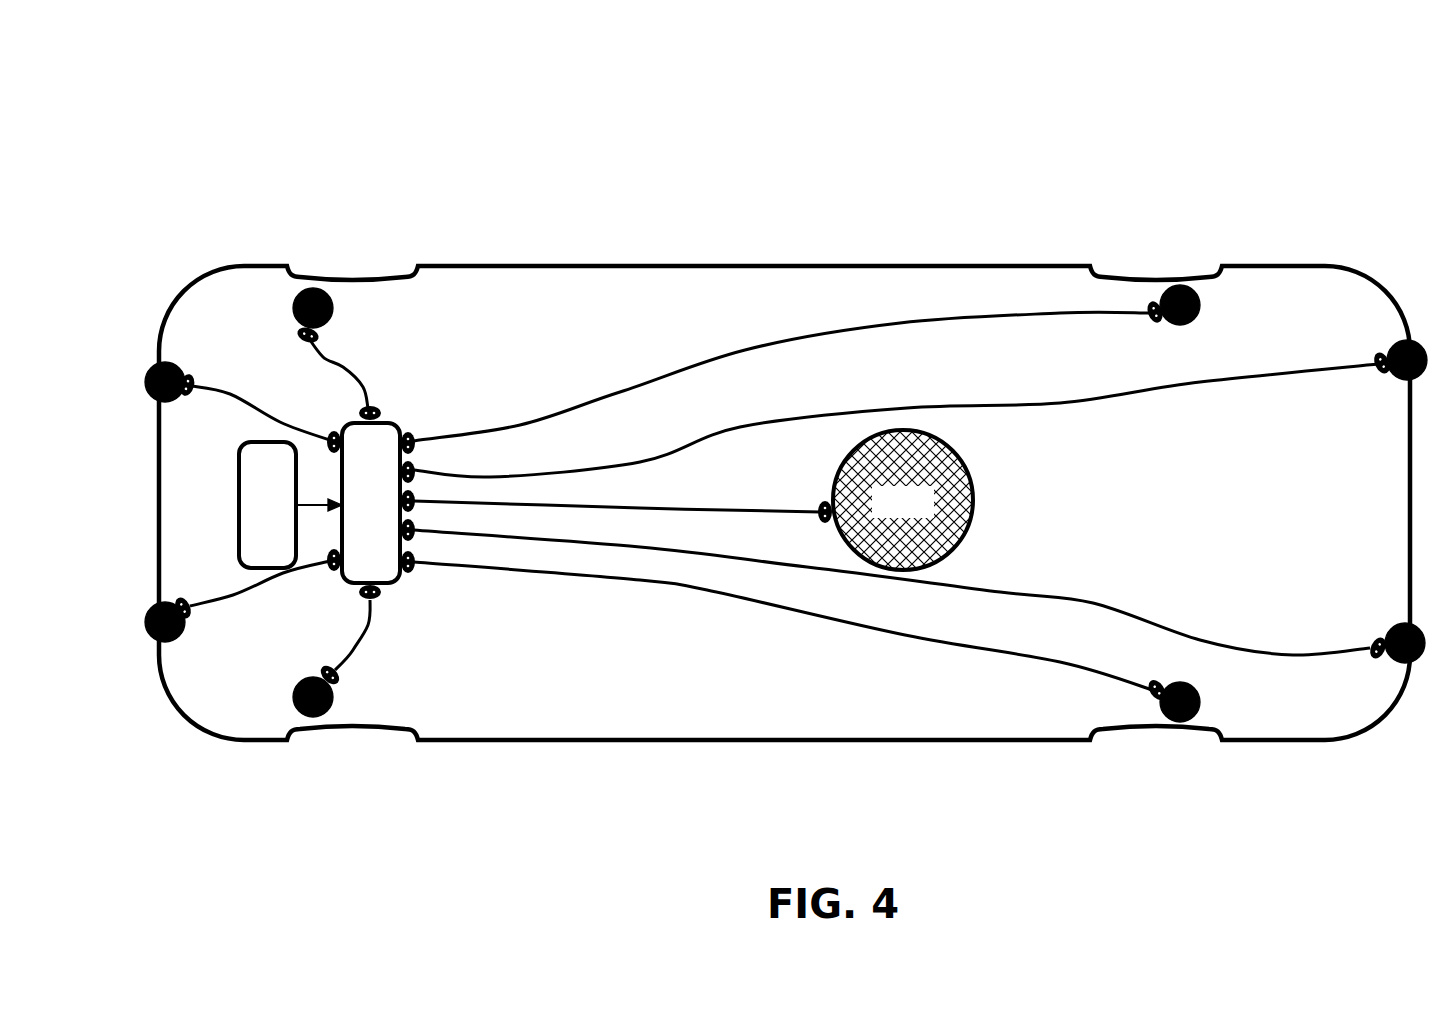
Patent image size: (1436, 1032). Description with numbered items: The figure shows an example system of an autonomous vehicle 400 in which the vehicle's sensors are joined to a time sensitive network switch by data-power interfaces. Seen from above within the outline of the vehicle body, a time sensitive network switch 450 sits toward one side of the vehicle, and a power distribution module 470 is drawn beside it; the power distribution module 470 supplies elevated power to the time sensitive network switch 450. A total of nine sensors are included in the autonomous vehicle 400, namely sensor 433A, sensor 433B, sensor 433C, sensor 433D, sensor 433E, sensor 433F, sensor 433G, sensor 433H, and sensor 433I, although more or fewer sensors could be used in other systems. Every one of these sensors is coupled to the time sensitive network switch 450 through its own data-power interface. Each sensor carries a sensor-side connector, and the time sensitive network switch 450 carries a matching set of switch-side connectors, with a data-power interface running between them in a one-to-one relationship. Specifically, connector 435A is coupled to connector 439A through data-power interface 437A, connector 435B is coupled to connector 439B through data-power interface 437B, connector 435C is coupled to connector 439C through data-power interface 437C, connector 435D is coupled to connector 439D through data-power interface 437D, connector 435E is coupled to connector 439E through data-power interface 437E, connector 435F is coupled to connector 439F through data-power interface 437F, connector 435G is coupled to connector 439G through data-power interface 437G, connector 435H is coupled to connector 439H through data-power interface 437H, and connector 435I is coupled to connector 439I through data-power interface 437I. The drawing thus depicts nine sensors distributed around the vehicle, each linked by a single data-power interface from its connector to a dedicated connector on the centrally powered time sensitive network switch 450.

The autonomous vehicle 400 is at (1277, 105).
The time sensitive network switch 450 is at (389, 515).
The power distribution module 470 is at (284, 515).
The sensor 433A is at (924, 515).
The sensor 433B is at (332, 702).
The sensor 433C is at (1201, 698).
The sensor 433D is at (1395, 626).
The sensor 433E is at (1392, 346).
The sensor 433F is at (1194, 320).
The sensor 433G is at (333, 310).
The sensor 433H is at (175, 367).
The sensor 433I is at (173, 637).
The connector 435A is at (822, 500).
The connector 435B is at (342, 678).
The connector 435C is at (1148, 694).
The connector 435D is at (1372, 638).
The connector 435E is at (1378, 375).
The connector 435F is at (1152, 322).
The connector 435G is at (320, 339).
The connector 435H is at (191, 378).
The connector 435I is at (190, 618).
The data-power interface 437A is at (730, 508).
The data-power interface 437B is at (357, 648).
The data-power interface 437C is at (905, 636).
The data-power interface 437D is at (1093, 601).
The data-power interface 437E is at (742, 428).
The data-power interface 437F is at (747, 352).
The data-power interface 437G is at (349, 370).
The data-power interface 437H is at (247, 402).
The data-power interface 437I is at (232, 594).
The connector 439A is at (419, 504).
The connector 439B is at (377, 600).
The connector 439C is at (419, 568).
The connector 439D is at (419, 536).
The connector 439E is at (419, 468).
The connector 439F is at (418, 437).
The connector 439G is at (378, 408).
The connector 439H is at (331, 432).
The connector 439I is at (334, 571).